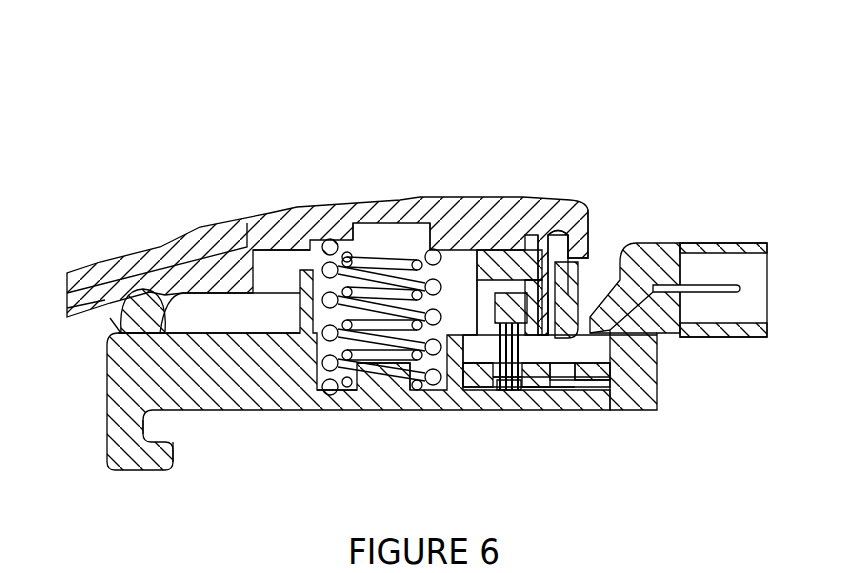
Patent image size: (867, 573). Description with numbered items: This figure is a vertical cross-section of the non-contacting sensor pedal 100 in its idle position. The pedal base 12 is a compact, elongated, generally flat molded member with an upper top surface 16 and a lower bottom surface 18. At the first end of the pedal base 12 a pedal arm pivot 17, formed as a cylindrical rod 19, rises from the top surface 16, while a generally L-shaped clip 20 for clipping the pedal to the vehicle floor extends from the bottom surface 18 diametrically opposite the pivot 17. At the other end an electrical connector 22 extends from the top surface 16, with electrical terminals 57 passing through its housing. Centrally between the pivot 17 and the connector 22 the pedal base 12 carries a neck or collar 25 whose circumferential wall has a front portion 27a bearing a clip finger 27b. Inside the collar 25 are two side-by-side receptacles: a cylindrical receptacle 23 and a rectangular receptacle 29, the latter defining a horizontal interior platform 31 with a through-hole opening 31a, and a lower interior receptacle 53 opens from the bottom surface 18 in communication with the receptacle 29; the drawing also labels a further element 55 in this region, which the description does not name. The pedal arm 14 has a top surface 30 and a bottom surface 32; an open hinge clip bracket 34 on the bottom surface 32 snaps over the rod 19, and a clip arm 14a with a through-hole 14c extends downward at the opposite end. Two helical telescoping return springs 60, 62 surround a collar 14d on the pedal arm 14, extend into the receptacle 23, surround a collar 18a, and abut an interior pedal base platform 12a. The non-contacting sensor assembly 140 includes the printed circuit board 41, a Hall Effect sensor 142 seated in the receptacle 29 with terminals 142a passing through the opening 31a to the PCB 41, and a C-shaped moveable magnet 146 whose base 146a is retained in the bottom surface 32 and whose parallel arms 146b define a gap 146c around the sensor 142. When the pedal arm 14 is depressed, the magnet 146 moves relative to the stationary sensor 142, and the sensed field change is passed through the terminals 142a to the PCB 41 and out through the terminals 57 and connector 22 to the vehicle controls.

The non-contacting sensor pedal 100 is at (568, 105).
The pedal base 12 is at (290, 414).
The interior pedal base platform 12a is at (335, 400).
The pedal arm 14 is at (297, 205).
The clip arm 14a is at (580, 300).
The through-hole 14c is at (568, 330).
The collar 14d is at (380, 240).
The top surface 16 is at (230, 332).
The pedal arm pivot 17 is at (105, 300).
The bottom surface 18 is at (197, 412).
The collar 18a is at (380, 384).
The rod 19 is at (67, 305).
The L-shaped clip 20 is at (160, 457).
The electrical connector 22 is at (735, 243).
The receptacle 23 is at (323, 344).
The neck or collar 25 is at (293, 282).
The front portion of circumferential wall 27a is at (595, 325).
The clip finger 27b is at (572, 305).
The receptacle 29 is at (482, 357).
The top surface of pedal arm 30 is at (273, 217).
The interior platform 31 is at (613, 380).
The through-hole opening 31a is at (543, 372).
The bottom surface of pedal arm 32 is at (227, 297).
The hinge clip bracket 34 is at (110, 303).
The printed circuit board 41 is at (583, 390).
The lower interior receptacle 53 is at (563, 397).
The contact pad 55 is at (512, 402).
The electrical terminals 57 is at (707, 293).
The pedal arm return spring 60 is at (330, 237).
The pedal arm return spring 62 is at (347, 237).
The non-contacting sensor assembly 140 is at (462, 288).
The Hall Effect sensor 142 is at (510, 290).
The terminals 142a is at (485, 392).
The moveable magnet 146 is at (525, 232).
The magnet base 146a is at (477, 262).
The magnet arms 146b is at (530, 270).
The magnet gap 146c is at (487, 360).